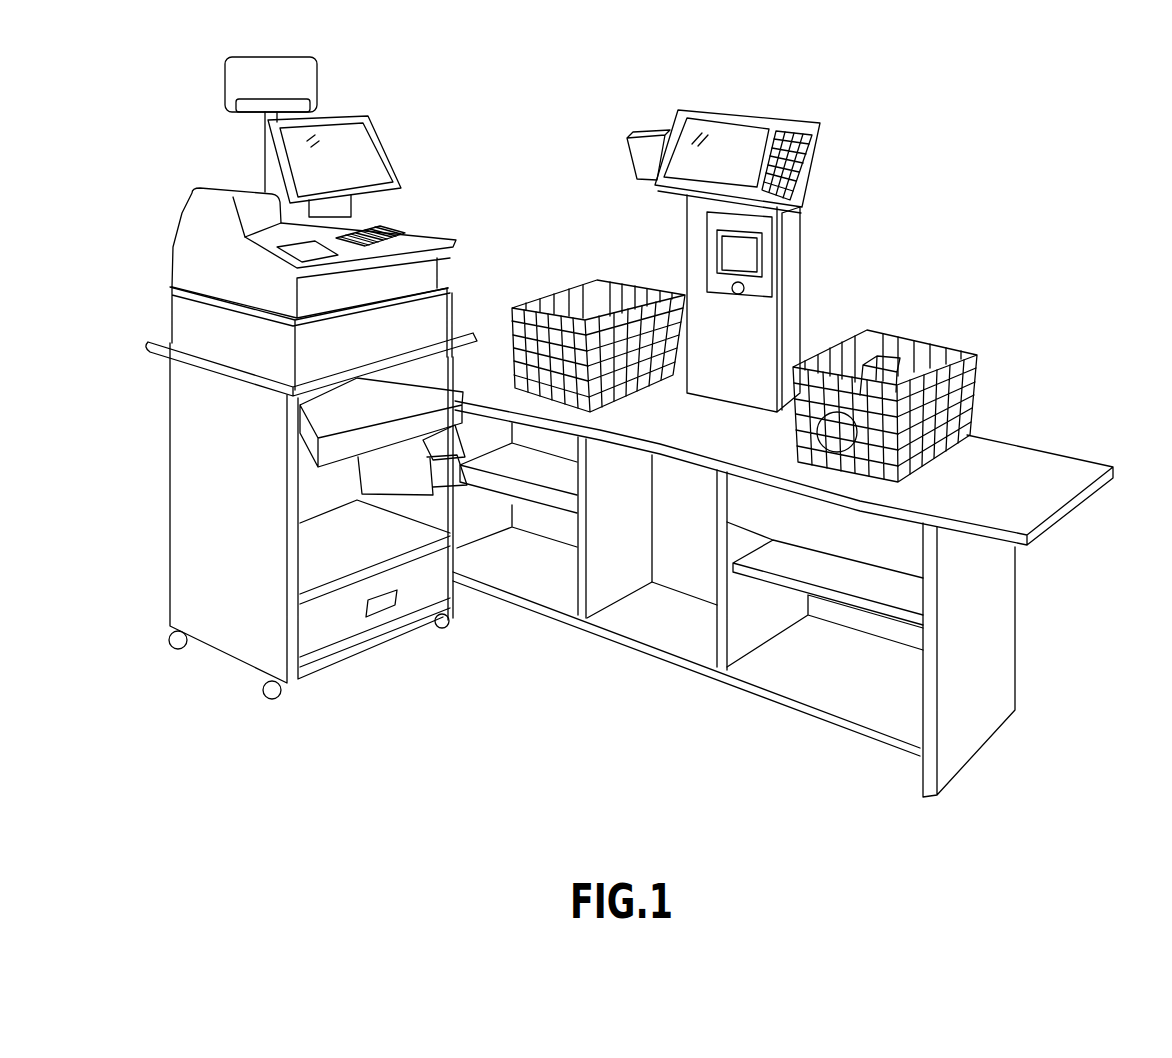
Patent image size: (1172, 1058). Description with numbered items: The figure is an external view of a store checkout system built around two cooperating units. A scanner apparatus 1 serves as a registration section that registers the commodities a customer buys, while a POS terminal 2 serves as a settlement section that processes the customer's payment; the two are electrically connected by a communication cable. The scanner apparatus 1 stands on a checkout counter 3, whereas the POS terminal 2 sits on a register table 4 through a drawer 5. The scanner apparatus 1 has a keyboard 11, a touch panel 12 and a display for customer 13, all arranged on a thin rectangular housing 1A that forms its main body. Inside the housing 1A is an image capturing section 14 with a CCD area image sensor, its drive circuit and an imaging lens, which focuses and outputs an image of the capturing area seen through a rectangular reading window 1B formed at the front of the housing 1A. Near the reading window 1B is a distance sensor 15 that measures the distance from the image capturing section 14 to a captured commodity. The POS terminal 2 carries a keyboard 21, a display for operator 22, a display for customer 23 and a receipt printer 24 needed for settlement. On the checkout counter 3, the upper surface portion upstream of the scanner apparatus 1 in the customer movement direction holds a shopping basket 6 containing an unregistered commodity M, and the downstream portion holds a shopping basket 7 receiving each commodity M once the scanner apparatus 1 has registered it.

The scanner apparatus 1 is at (733, 234).
The housing 1A is at (788, 315).
The reading window 1B is at (750, 253).
The POS terminal 2 is at (302, 187).
The checkout counter 3 is at (1055, 452).
The register table 4 is at (185, 467).
The drawer 5 is at (187, 315).
The shopping basket 6 is at (910, 377).
The shopping basket 7 is at (553, 297).
The keyboard 11 is at (796, 124).
The touch panel 12 is at (733, 137).
The display for customer 13 is at (637, 162).
The image capturing section 14 is at (710, 214).
The distance sensor 15 is at (737, 294).
The keyboard 21 is at (407, 227).
The display for operator 22 is at (382, 147).
The display for customer 23 is at (318, 78).
The receipt printer 24 is at (230, 186).
The commodity M is at (892, 332).